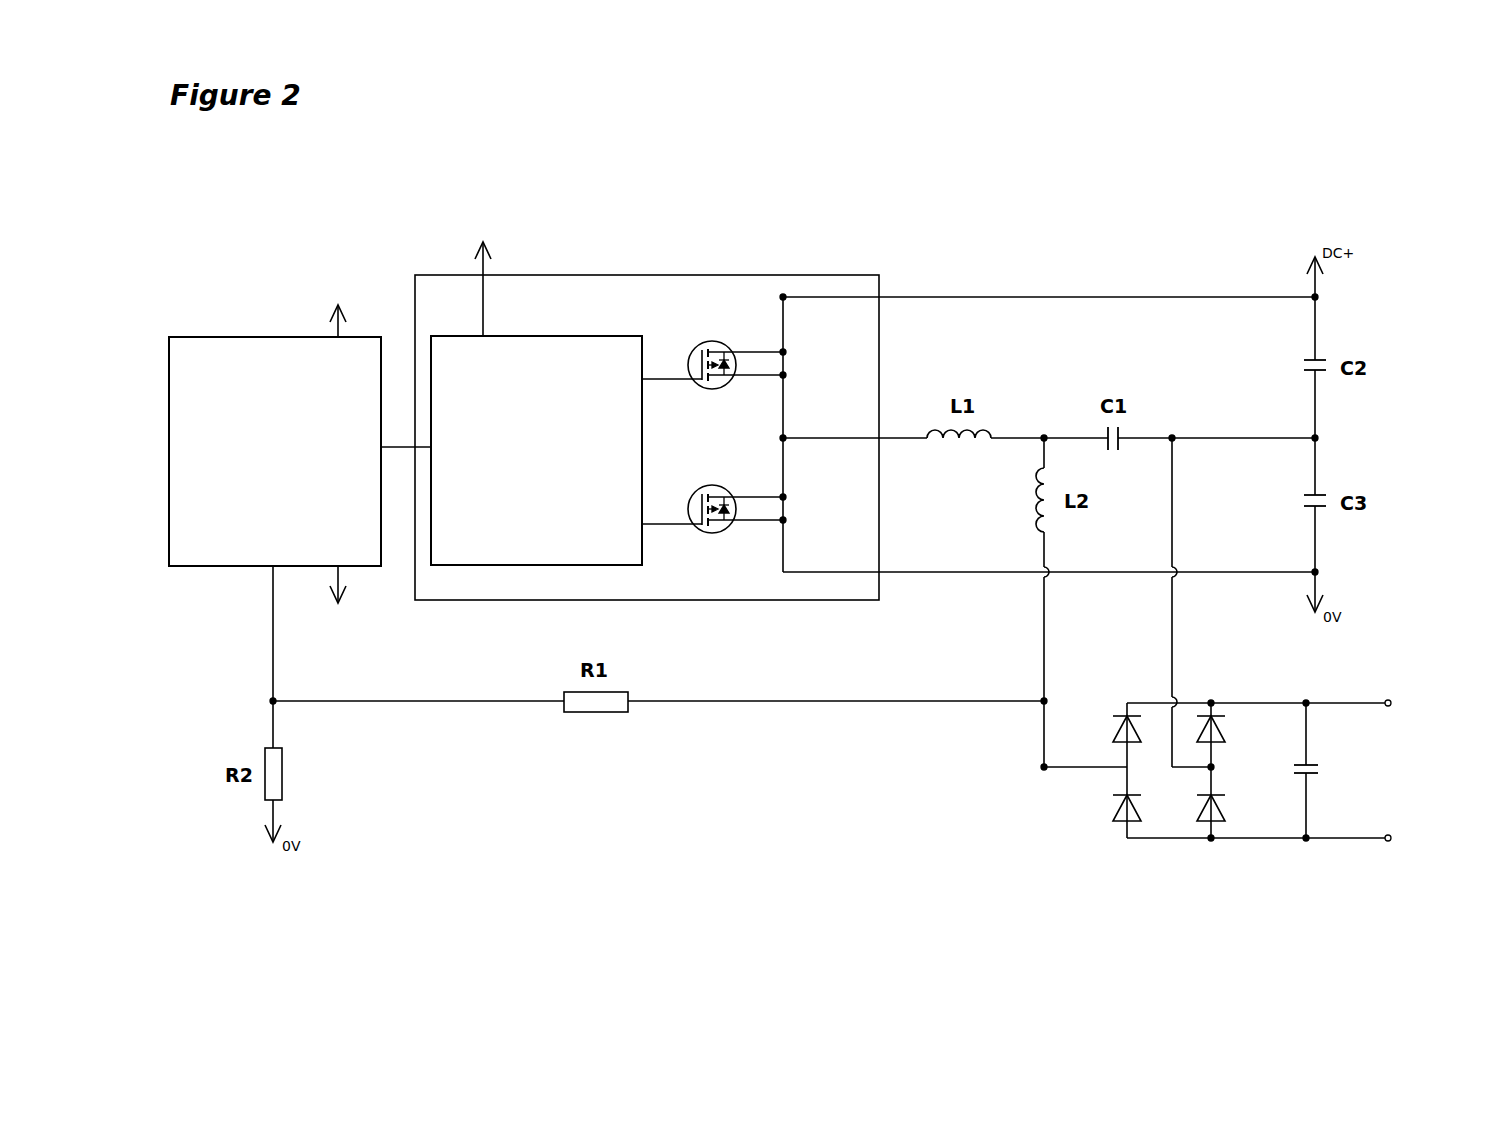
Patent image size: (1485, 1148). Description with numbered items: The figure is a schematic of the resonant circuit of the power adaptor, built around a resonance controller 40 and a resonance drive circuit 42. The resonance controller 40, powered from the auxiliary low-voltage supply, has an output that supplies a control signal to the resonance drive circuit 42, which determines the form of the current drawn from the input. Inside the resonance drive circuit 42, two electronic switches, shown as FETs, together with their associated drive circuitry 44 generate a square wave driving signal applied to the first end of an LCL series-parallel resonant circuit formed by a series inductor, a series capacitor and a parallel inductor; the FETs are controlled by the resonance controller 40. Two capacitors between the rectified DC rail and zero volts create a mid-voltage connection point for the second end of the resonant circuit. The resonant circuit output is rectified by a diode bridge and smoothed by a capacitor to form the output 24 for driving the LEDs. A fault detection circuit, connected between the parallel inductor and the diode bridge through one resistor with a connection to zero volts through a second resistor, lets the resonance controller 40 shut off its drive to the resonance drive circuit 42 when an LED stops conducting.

The resonance controller 40 is at (275, 452).
The resonance drive circuit 42 is at (557, 291).
The drive circuitry 44 is at (536, 396).
The output 24 is at (1400, 821).